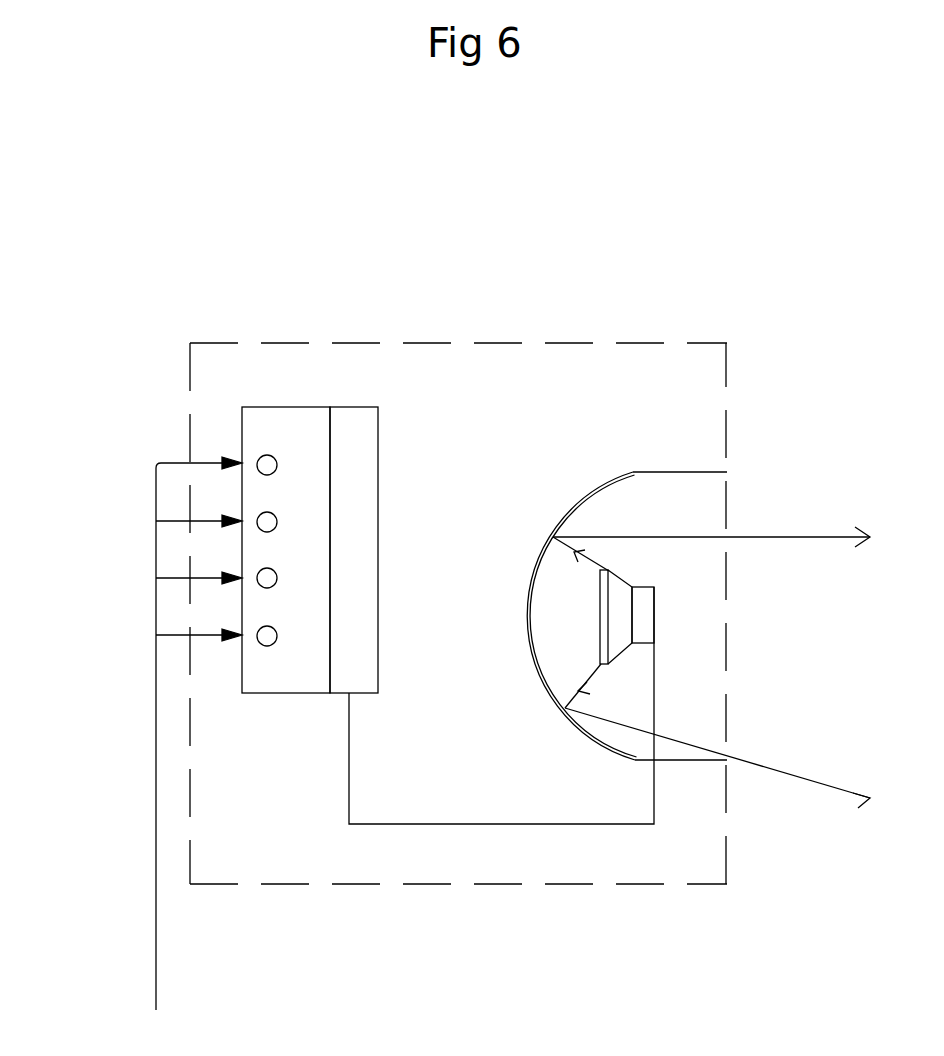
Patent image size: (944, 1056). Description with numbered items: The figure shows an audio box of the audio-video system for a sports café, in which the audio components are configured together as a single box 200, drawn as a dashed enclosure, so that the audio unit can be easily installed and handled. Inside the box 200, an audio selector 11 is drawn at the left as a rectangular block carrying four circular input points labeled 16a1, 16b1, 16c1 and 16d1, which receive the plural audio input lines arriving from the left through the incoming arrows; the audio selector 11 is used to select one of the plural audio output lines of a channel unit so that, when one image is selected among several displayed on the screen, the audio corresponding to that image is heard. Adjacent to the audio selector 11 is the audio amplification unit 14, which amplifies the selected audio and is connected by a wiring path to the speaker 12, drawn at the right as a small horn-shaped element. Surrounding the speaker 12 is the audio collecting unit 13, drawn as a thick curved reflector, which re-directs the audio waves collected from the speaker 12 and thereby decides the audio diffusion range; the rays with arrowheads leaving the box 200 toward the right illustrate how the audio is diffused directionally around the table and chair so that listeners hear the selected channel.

The single box 200 is at (693, 860).
The audio selector 11 is at (280, 425).
The audio amplification unit 14 is at (352, 422).
The audio collecting unit 13 is at (623, 470).
The speaker 12 is at (647, 610).
The light receiving element 16a1 is at (257, 623).
The light receiving element 16b1 is at (253, 568).
The light receiving element 16c1 is at (250, 510).
The light receiving element 16d1 is at (252, 457).